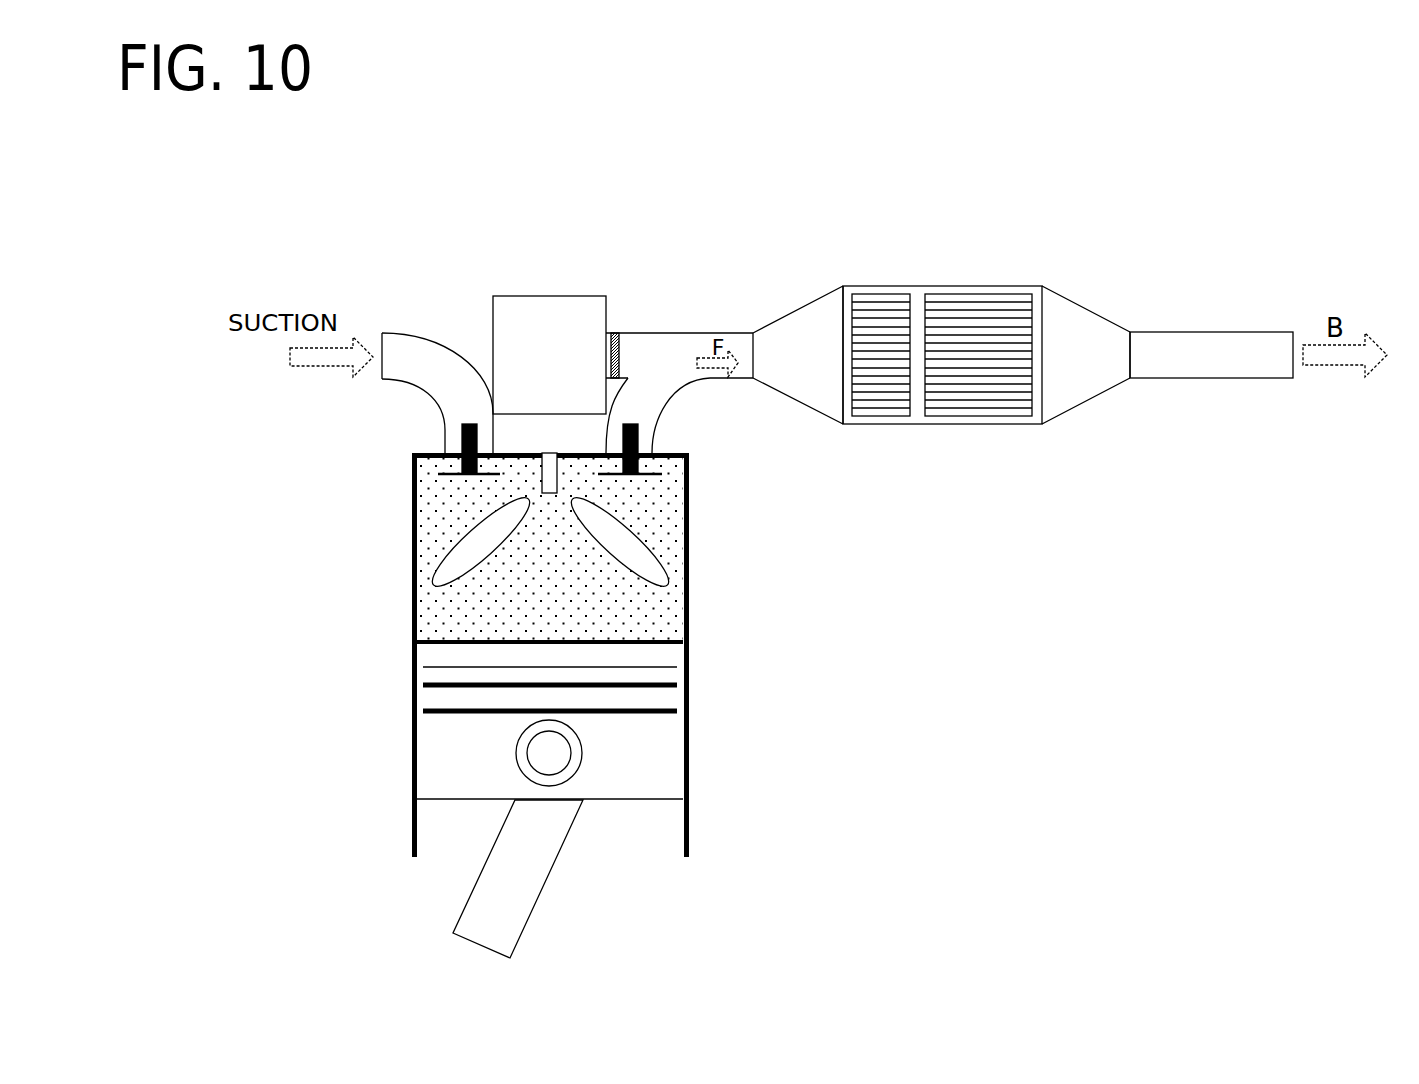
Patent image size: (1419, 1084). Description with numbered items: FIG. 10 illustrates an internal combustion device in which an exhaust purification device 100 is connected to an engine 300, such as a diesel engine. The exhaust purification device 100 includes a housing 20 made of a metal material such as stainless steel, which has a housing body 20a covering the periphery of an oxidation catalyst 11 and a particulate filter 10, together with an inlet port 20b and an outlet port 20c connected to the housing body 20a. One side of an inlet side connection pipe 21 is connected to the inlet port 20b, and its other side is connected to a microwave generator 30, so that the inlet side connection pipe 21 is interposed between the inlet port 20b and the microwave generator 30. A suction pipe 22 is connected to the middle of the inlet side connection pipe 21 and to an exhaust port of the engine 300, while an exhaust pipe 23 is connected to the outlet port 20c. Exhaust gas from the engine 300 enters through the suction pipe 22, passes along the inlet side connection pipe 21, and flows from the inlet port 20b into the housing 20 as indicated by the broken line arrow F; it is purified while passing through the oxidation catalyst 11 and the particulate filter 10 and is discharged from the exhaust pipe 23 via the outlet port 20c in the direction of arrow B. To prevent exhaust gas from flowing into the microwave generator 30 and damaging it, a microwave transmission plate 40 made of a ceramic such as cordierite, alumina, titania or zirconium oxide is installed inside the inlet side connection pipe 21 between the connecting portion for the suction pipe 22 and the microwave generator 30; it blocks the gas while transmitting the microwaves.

The particulate filter 10 is at (975, 416).
The oxidation catalyst 11 is at (880, 416).
The housing 20 is at (941, 325).
The housing body 20a is at (939, 286).
The inlet port 20b is at (797, 310).
The outlet port 20c is at (1087, 307).
The inlet side connection pipe 21 is at (724, 333).
The suction pipe 22 is at (652, 440).
The exhaust pipe 23 is at (1209, 332).
The microwave generator 30 is at (548, 296).
The microwave transmission plate 40 is at (613, 333).
The exhaust purification device 100 is at (1102, 210).
The engine 300 is at (689, 650).